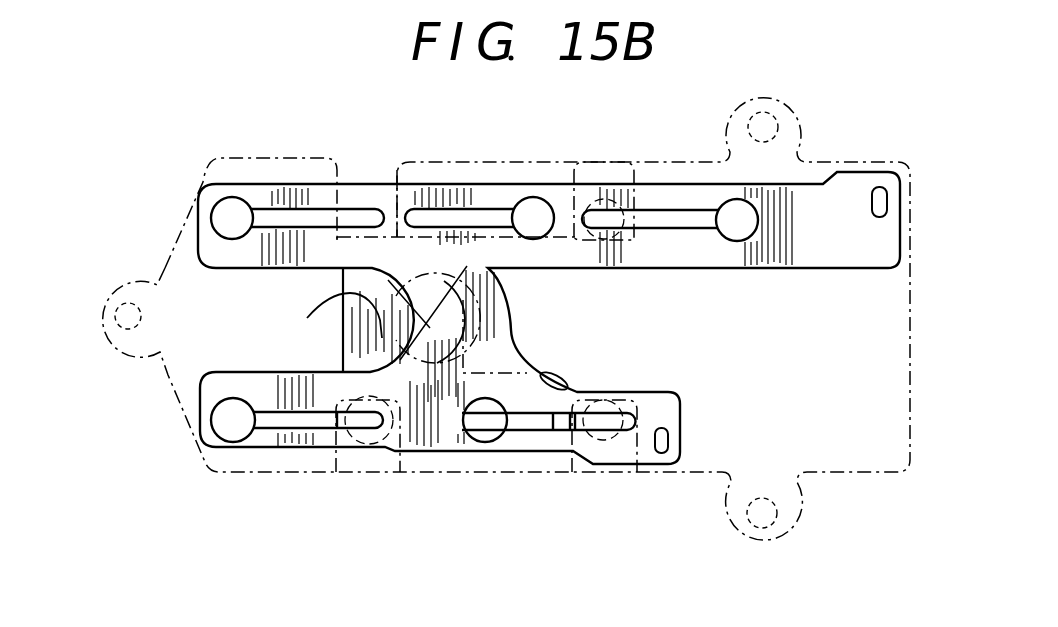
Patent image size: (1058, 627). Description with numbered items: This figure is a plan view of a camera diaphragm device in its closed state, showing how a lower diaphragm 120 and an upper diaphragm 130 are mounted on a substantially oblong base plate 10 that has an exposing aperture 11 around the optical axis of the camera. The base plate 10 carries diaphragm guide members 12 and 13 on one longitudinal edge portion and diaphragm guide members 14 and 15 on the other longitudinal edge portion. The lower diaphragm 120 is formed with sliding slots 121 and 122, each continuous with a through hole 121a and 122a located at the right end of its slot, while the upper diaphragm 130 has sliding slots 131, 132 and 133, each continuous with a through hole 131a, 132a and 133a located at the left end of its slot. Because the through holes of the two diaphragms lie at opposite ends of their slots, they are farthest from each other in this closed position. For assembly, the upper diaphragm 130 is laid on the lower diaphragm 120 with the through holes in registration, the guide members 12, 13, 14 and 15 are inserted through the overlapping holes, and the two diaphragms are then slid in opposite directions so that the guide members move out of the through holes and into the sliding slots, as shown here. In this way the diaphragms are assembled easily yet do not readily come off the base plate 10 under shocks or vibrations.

The base plate 10 is at (165, 268).
The exposing aperture 11 is at (307, 318).
The diaphragm guide member 12 is at (353, 205).
The diaphragm guide member 13 is at (632, 200).
The diaphragm guide member 14 is at (357, 430).
The diaphragm guide member 15 is at (612, 442).
The lower diaphragm 120 is at (537, 319).
The sliding slot 121 is at (495, 213).
The through hole 121a is at (547, 212).
The sliding slot 122 is at (685, 212).
The through hole 122a is at (738, 208).
The upper diaphragm 130 is at (222, 386).
The sliding slot 131 is at (327, 212).
The through hole 131a is at (250, 204).
The sliding slot 132 is at (335, 426).
The through hole 132a is at (247, 436).
The sliding slot 133 is at (545, 428).
The through hole 133a is at (500, 438).